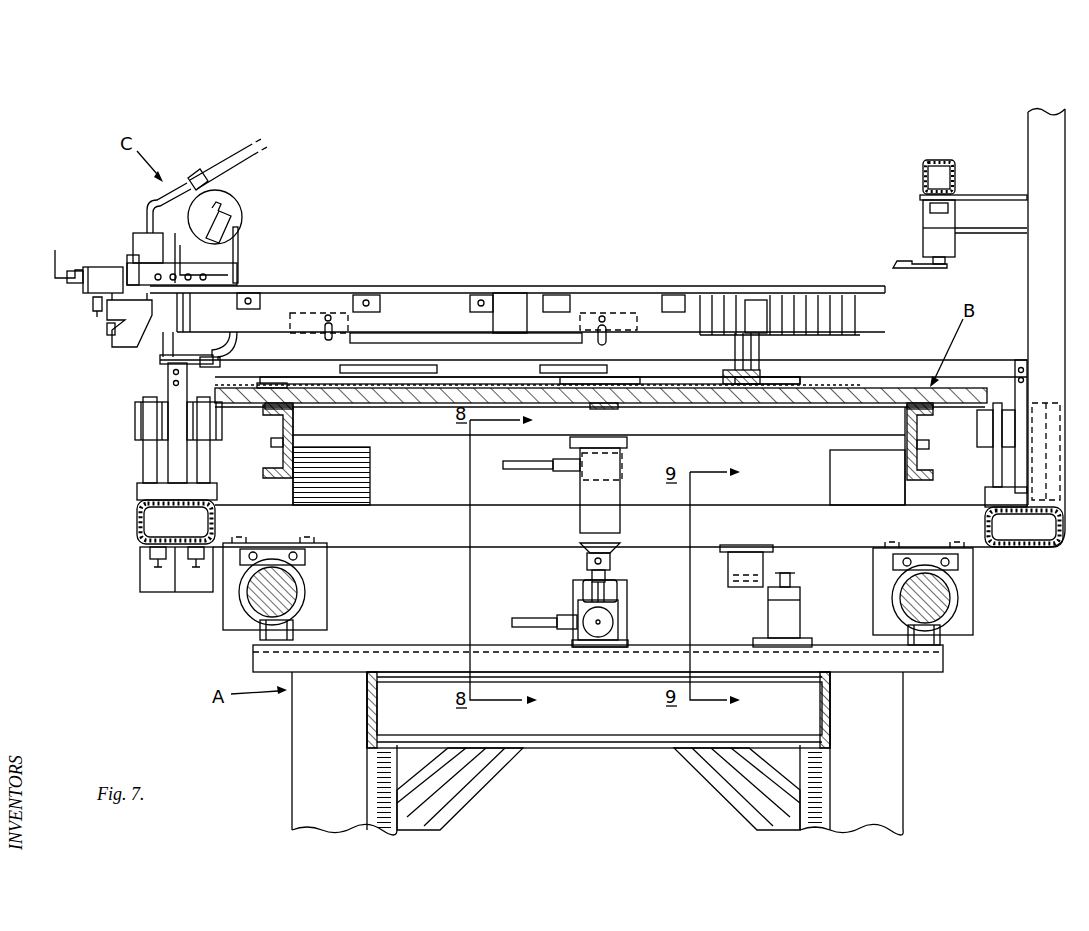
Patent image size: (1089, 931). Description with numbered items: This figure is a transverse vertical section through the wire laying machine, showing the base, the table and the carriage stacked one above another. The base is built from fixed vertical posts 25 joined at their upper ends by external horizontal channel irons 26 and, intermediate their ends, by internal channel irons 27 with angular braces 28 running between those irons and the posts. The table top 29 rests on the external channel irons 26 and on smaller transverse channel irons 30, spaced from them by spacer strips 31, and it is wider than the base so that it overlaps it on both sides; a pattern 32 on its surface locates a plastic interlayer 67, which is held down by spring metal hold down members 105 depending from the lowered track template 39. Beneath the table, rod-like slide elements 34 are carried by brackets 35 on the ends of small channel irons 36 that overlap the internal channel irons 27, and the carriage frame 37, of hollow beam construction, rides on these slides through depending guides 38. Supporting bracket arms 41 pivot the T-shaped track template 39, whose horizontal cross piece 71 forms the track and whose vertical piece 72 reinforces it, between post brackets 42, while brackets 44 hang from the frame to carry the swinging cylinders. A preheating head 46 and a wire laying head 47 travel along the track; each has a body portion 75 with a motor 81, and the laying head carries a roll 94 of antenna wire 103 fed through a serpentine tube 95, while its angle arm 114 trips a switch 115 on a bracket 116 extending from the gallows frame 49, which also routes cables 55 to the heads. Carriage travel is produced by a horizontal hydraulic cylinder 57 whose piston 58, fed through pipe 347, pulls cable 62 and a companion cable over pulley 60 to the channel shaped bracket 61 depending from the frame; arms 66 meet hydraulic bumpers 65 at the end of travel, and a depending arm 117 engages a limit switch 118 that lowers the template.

The vertical posts 25 is at (298, 731).
The external horizontal channel irons 26 is at (284, 432).
The internal horizontal channel irons 27 is at (367, 716).
The braces 28 is at (487, 762).
The table top 29 is at (897, 391).
The smaller channel irons 30 is at (742, 420).
The spacer strips 31 is at (295, 404).
The pattern 32 is at (275, 381).
The slide elements 34 is at (290, 594).
The brackets 35 is at (270, 628).
The small channel irons 36 is at (903, 663).
The carriage frame 37 is at (137, 520).
The guides 38 is at (313, 608).
The track template 39 is at (410, 288).
The supporting bracket arms 41 is at (167, 383).
The post brackets 42 is at (135, 425).
The brackets 44 is at (152, 576).
The preheating head 46 is at (80, 298).
The wire laying head 47 is at (140, 223).
The gallows frame 49 is at (1024, 140).
The cables 55 is at (222, 165).
The hydraulic cylinder 57 is at (628, 612).
The piston 58 is at (587, 602).
The pulley 60 is at (626, 580).
The channel shaped bracket 61 is at (618, 545).
The cable 62 is at (583, 548).
The hydraulic bumpers 65 is at (621, 482).
The arms 66 is at (590, 490).
The plastic interlayer 67 is at (790, 384).
The horizontal cross piece 71 is at (505, 293).
The vertical piece 72 is at (604, 308).
The body portion 75 is at (190, 270).
The motor 81 is at (127, 330).
The roll of antenna wire 94 is at (227, 206).
The serpentine tube 95 is at (230, 333).
The wire 103 is at (239, 249).
The hold down members 105 is at (607, 348).
The angle arm 114 is at (59, 260).
The switch 115 is at (933, 245).
The bracket 116 is at (923, 178).
The depending arm 117 is at (737, 565).
The limit switch 118 is at (780, 606).
The pipe 347 is at (537, 620).